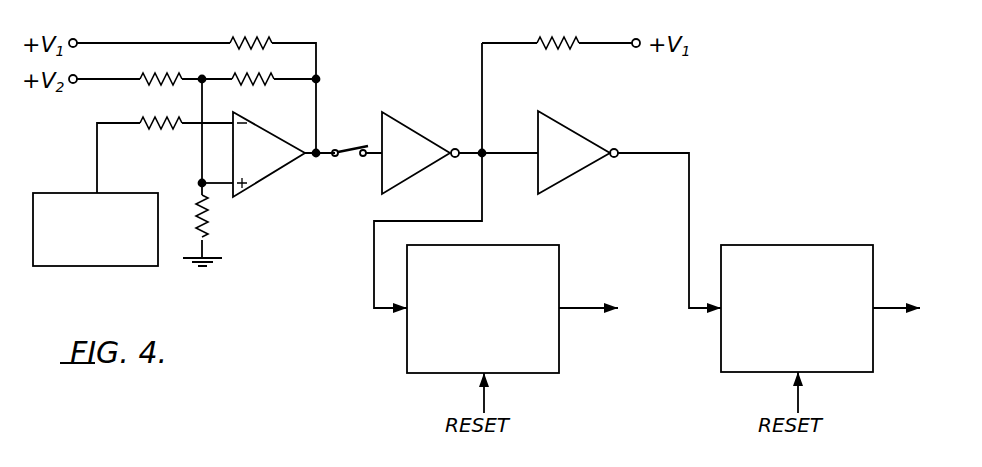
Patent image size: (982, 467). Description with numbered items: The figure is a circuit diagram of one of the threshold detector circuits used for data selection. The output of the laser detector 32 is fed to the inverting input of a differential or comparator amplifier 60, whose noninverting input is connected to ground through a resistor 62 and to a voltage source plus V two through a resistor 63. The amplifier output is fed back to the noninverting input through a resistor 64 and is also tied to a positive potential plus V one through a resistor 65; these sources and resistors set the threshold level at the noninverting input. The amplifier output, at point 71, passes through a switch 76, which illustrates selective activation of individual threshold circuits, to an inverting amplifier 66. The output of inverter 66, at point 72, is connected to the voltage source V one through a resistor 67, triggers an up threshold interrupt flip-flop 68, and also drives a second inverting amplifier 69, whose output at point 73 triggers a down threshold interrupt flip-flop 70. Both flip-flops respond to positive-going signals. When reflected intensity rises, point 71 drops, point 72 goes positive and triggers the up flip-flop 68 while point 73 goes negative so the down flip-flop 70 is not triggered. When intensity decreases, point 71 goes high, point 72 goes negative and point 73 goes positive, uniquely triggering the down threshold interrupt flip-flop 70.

The laser detector 32 is at (70, 190).
The comparator amplifier 60 is at (264, 177).
The resistor 62 is at (207, 222).
The resistor 63 is at (168, 74).
The resistor 64 is at (258, 74).
The resistor 65 is at (258, 38).
The inverting amplifier 66 is at (406, 123).
The resistor 67 is at (558, 38).
The up threshold interrupt flip-flop 68 is at (515, 245).
The second inverting amplifier 69 is at (579, 112).
The down threshold interrupt flip-flop 70 is at (800, 245).
The point 71 is at (317, 156).
The point 72 is at (483, 152).
The point 73 is at (620, 150).
The switch 76 is at (357, 145).